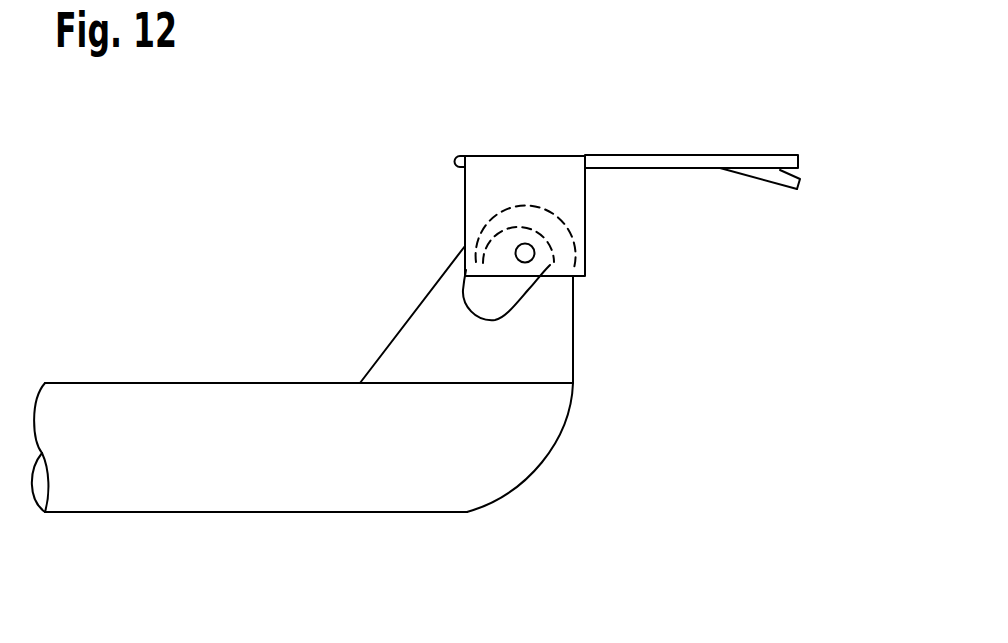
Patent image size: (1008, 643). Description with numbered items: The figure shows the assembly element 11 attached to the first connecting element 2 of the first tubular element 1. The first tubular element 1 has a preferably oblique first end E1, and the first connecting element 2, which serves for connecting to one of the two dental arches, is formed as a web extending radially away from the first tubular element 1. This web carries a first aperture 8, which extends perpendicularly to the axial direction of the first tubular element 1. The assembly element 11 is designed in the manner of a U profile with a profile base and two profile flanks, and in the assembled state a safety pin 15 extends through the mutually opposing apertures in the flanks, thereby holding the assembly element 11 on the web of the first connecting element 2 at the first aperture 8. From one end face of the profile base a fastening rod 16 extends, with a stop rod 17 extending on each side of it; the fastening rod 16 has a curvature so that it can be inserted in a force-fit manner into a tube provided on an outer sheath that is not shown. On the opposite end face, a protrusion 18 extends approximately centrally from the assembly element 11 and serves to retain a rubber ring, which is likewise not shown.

The first tubular element 1 is at (255, 493).
The first connecting element 2 is at (417, 337).
The first aperture 8 is at (524, 279).
The assembly element 11 is at (412, 130).
The safety pin 15 is at (534, 252).
The fastening rod 16 is at (797, 190).
The stop rod 17 is at (793, 163).
The protrusion 18 is at (452, 161).
The first end E1 is at (533, 458).